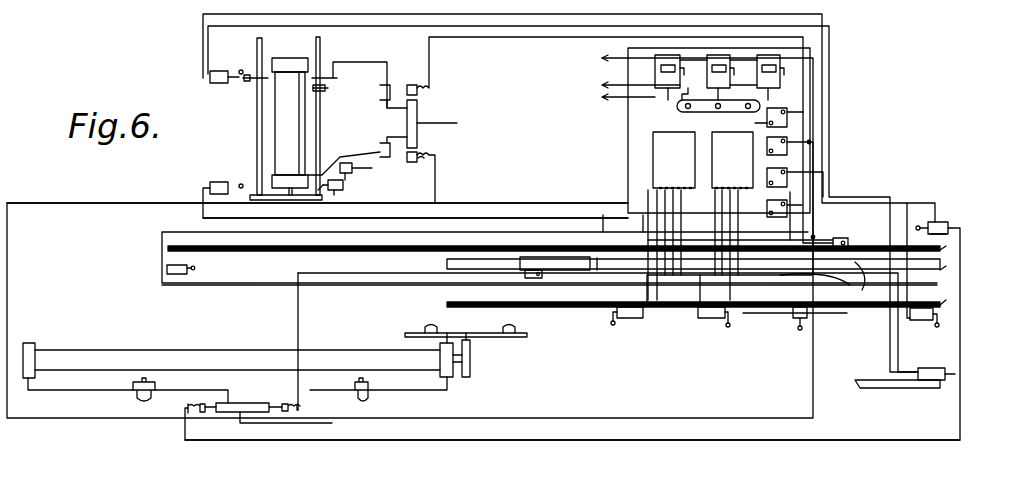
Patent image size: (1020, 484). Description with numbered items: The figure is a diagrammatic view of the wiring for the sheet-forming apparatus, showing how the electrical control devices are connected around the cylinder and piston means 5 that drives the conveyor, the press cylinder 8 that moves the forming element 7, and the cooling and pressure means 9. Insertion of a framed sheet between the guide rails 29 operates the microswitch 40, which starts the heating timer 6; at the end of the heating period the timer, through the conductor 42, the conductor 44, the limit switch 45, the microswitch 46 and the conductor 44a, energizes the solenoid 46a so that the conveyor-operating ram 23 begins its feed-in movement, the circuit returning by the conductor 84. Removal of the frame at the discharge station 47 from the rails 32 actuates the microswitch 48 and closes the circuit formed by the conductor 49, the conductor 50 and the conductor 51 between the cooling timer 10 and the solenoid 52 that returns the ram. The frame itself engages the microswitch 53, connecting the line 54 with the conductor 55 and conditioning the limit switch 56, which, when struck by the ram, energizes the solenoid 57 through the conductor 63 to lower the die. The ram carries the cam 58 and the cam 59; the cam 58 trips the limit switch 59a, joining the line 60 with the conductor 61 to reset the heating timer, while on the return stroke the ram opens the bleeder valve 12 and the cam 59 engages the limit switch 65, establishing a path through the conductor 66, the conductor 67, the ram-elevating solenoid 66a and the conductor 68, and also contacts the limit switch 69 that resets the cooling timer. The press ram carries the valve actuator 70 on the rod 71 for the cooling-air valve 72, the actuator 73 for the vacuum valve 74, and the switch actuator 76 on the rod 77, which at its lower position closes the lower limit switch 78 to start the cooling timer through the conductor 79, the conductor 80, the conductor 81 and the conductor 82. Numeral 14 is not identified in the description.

The cylinder and piston means 5 is at (193, 354).
The heating timer 6 is at (720, 134).
The forming element 7 is at (305, 200).
The press cylinder 8 is at (312, 130).
The cooling and pressure means 9 is at (344, 186).
The cooling timer 10 is at (655, 154).
The bleeder valve 12 is at (800, 330).
The frame 14 is at (690, 14).
The conveyor-operating ram 23 is at (471, 362).
The guide rails 29 is at (935, 250).
The rails 32 is at (445, 260).
The microswitch 40 is at (837, 240).
The conductor 42 is at (766, 122).
The conductor 44 is at (203, 20).
The conductor 44a is at (895, 440).
The limit switch 45 is at (218, 70).
The microswitch 46 is at (942, 224).
The solenoid 46a is at (200, 414).
The discharge station 47 is at (730, 195).
The microswitch 48 is at (543, 276).
The conductor 49 is at (690, 200).
The conductor 50 is at (597, 270).
The conductor 51 is at (300, 325).
The solenoid 52 is at (300, 404).
The microswitch 53 is at (193, 275).
The line 54 is at (160, 243).
The conductor 55 is at (283, 285).
The limit switch 56 is at (930, 382).
The solenoid 57 is at (412, 85).
The cam 58 is at (428, 325).
The cam 59 is at (515, 326).
The limit switch 59a is at (613, 325).
The line 60 is at (798, 51).
The conductor 61 is at (700, 280).
The conductor 63 is at (515, 40).
The limit switch 65 is at (940, 323).
The conductor 66 is at (860, 280).
The ram-elevating solenoid 66a is at (418, 164).
The conductor 67 is at (603, 215).
The conductor 68 is at (85, 203).
The limit switch 69 is at (729, 327).
The valve actuator 70 is at (329, 89).
The rod 71 is at (321, 146).
The valve 72 is at (323, 188).
The actuator 73 is at (333, 78).
The valve 74 is at (340, 157).
The switch actuator 76 is at (246, 80).
The rod 77 is at (257, 120).
The lower limit switch 78 is at (218, 182).
The conductor 79 is at (643, 215).
The conductor 80 is at (648, 241).
The conductor 81 is at (477, 224).
The conductor 82 is at (455, 217).
The conductor 84 is at (809, 142).